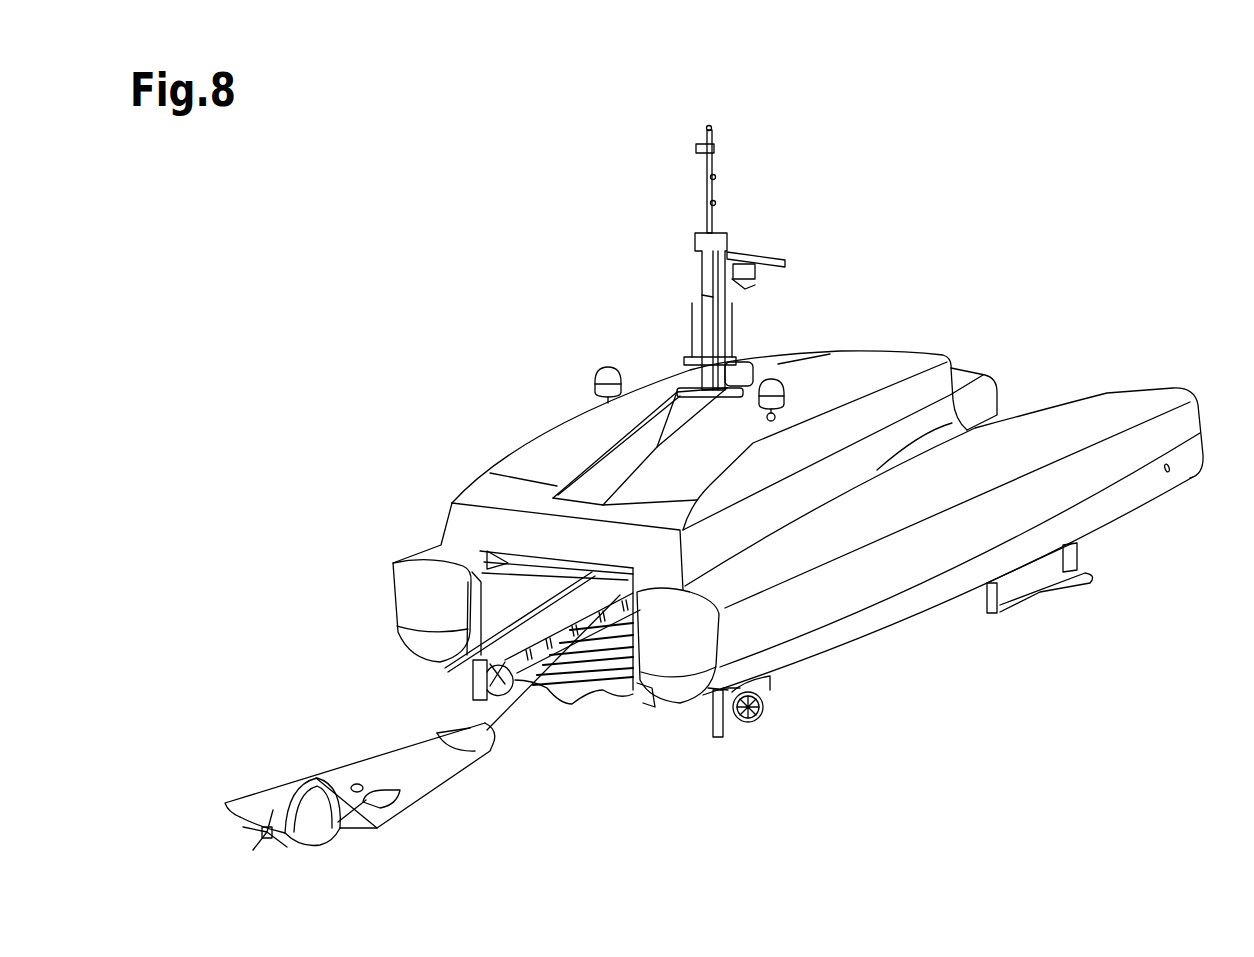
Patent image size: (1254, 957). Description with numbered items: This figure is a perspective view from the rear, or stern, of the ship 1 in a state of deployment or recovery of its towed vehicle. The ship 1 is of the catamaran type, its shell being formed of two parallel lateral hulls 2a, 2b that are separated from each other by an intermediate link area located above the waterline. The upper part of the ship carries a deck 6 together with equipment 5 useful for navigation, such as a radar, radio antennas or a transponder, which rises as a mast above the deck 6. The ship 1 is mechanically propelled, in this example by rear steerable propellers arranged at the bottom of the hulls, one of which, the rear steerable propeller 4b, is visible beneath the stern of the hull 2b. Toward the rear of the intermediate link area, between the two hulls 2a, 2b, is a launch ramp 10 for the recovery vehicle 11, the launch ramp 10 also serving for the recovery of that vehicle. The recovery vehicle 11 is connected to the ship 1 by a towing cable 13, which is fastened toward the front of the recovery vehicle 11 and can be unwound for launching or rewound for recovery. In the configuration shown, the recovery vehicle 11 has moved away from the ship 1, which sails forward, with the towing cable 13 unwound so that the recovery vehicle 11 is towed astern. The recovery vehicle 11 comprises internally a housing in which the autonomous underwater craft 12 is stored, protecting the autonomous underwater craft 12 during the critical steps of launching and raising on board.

The ship 1 is at (915, 277).
The lateral hull 2a is at (418, 643).
The lateral hull 2b is at (1125, 495).
The rear steerable propeller 4b is at (767, 705).
The equipment useful for the navigation 5 is at (698, 279).
The deck 6 is at (560, 443).
The launch ramp 10 is at (593, 703).
The recovery vehicle 11 is at (397, 760).
The autonomous underwater craft 12 is at (313, 805).
The towing cable 13 is at (508, 713).